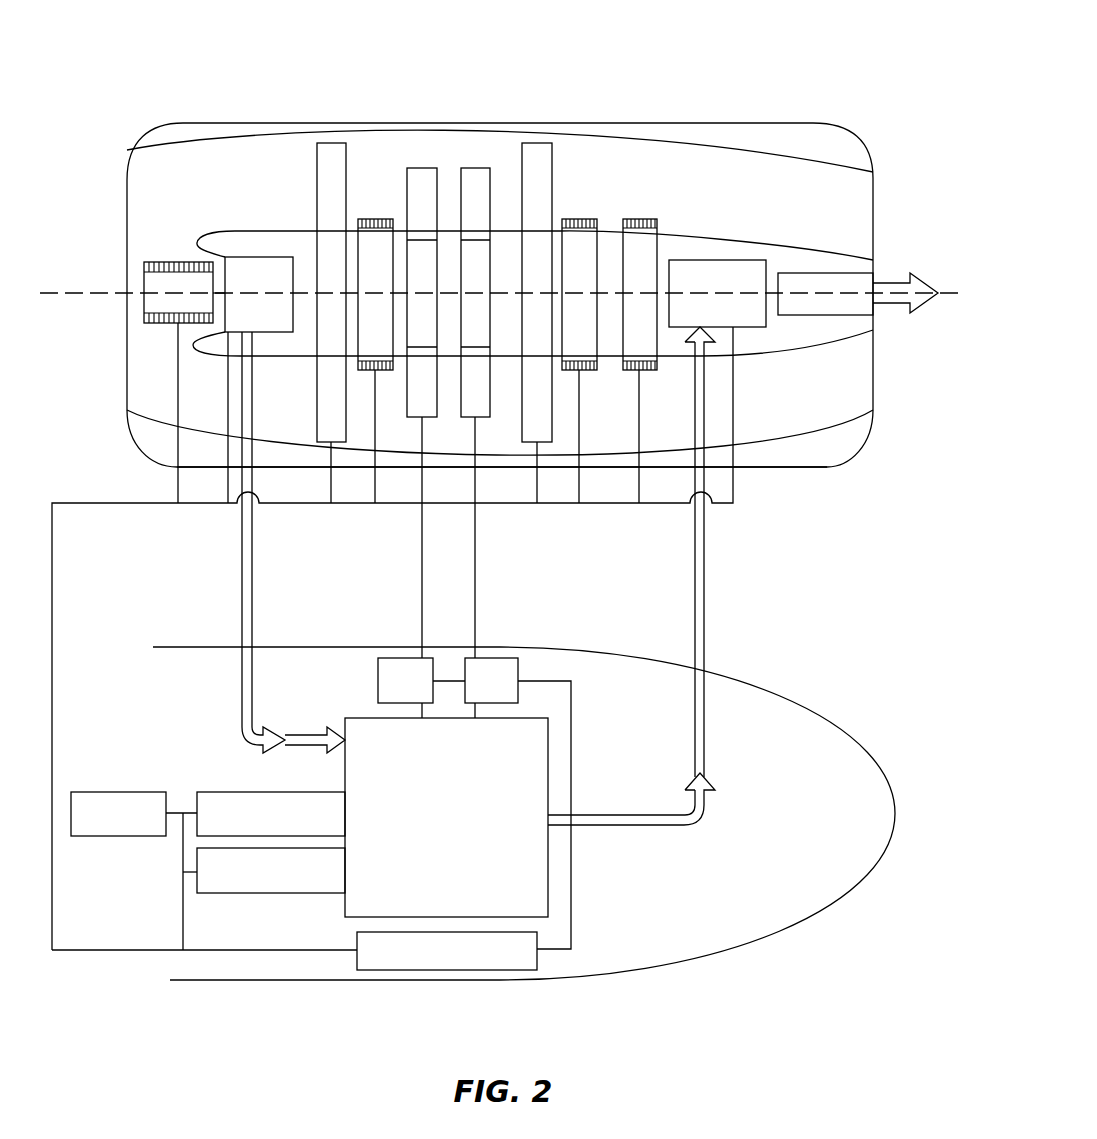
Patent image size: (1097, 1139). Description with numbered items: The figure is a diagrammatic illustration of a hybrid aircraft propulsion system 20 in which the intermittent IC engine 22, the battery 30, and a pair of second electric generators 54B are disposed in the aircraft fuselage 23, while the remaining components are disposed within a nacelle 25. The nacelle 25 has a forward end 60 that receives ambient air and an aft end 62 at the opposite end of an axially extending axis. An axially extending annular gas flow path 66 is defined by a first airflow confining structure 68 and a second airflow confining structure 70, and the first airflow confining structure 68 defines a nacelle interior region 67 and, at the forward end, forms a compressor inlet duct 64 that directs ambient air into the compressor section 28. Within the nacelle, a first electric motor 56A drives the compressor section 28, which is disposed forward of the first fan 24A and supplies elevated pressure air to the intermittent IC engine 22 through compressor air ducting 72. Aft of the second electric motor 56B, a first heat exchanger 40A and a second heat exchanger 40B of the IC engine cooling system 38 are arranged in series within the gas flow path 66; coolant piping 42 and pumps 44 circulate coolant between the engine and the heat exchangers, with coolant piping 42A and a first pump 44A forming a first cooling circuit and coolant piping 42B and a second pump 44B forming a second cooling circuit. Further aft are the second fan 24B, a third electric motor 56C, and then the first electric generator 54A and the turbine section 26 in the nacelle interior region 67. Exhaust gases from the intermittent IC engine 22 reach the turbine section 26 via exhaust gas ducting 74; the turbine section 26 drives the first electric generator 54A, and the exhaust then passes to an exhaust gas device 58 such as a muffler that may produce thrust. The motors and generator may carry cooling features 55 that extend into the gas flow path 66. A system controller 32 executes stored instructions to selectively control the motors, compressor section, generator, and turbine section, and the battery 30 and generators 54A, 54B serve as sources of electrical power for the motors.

The aircraft propulsion system 20 is at (757, 70).
The intermittent IC engine 22 is at (435, 860).
The fuselage 23 is at (775, 935).
The first fan 24A is at (330, 143).
The second fan 24B is at (537, 143).
The nacelle 25 is at (827, 467).
The turbine section 26 is at (705, 319).
The compressor section 28 is at (247, 320).
The battery 30 is at (117, 836).
The system controller 32 is at (447, 970).
The IC engine cooling system 38 is at (377, 620).
The first heat exchanger 40A is at (422, 168).
The second heat exchanger 40B is at (475, 168).
The coolant piping 42 is at (449, 537).
The coolant piping 42A is at (422, 575).
The coolant piping 42B is at (475, 555).
The pump 44 is at (421, 770).
The first pump 44A is at (378, 672).
The second pump 44B is at (512, 658).
The first electric generator 54A is at (658, 248).
The second electric generators 54B is at (203, 828).
The cooling features 55 is at (162, 263).
The first electric motor 56A is at (143, 298).
The second electric motor 56B is at (367, 219).
The third electric motor 56C is at (598, 252).
The exhaust gas device 58 is at (826, 273).
The forward end 60 is at (127, 388).
The aft end 62 is at (873, 200).
The compressor inlet duct 64 is at (211, 257).
The gas flow path 66 is at (242, 182).
The nacelle interior region 67 is at (296, 245).
The first airflow confining structure 68 is at (233, 233).
The second airflow confining structure 70 is at (193, 152).
The compressor air ducting 72 is at (242, 541).
The exhaust gas ducting 74 is at (705, 567).